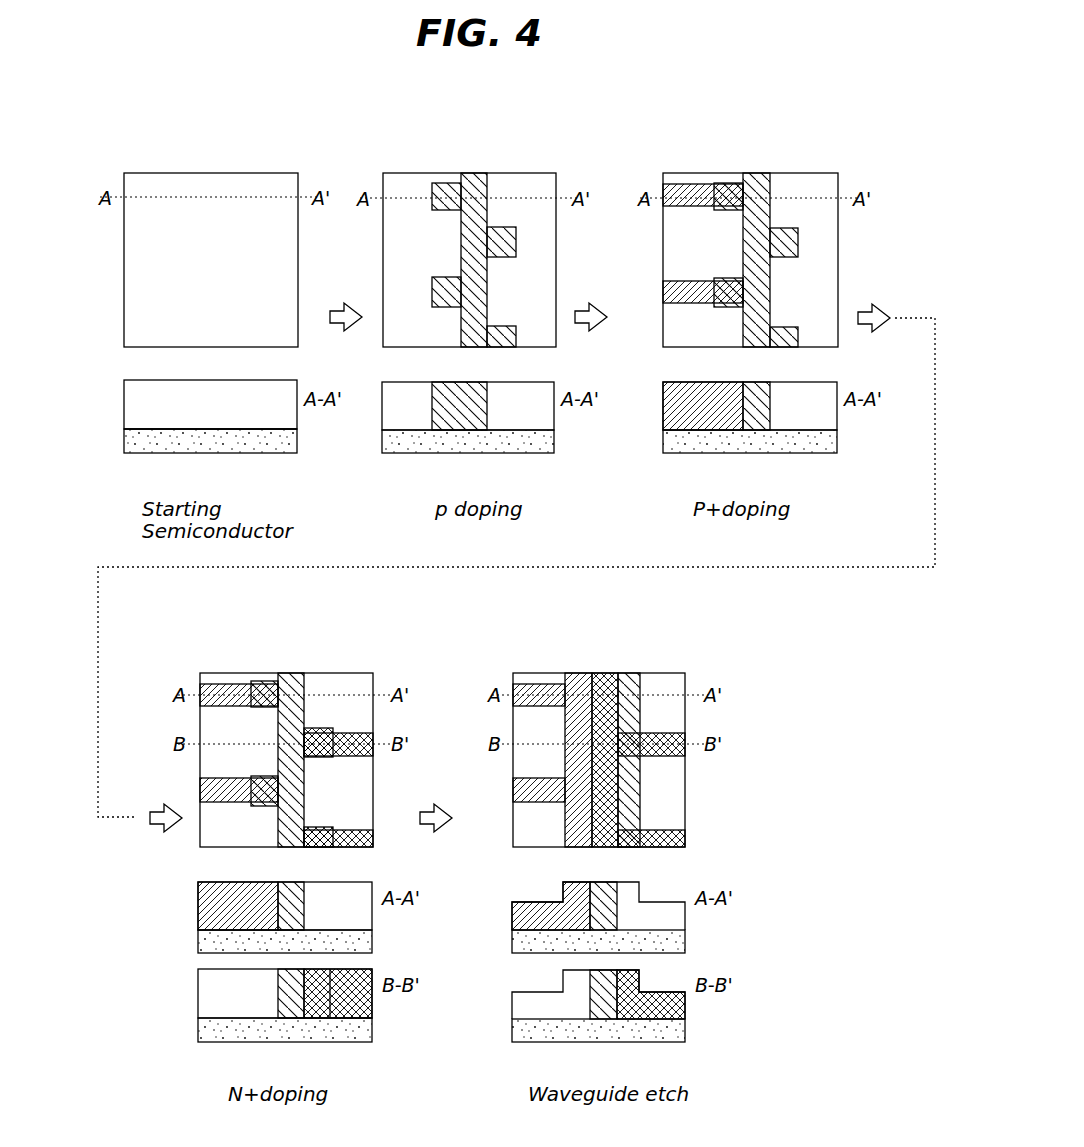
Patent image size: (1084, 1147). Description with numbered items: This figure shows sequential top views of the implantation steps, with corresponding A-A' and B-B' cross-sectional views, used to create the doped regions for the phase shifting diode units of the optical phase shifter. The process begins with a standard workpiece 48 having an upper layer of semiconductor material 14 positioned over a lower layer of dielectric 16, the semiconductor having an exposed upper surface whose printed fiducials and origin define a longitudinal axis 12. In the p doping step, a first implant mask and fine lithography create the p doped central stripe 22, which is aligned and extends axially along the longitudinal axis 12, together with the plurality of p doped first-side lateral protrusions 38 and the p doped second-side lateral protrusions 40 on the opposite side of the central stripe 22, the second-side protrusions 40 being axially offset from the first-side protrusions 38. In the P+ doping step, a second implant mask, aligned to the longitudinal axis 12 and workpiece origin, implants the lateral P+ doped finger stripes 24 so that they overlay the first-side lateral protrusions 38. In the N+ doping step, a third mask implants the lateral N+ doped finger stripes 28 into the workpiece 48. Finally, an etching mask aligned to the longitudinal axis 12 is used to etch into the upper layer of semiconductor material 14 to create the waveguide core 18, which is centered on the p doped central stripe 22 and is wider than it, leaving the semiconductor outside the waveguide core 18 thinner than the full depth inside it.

The longitudinal axis 12 is at (217, 173).
The upper layer of semiconductor material 14 is at (142, 410).
The lower layer of dielectric 16 is at (124, 438).
The waveguide core 18 is at (640, 695).
The p doped central stripe 22 is at (487, 195).
The lateral P+ doped finger stripes 24 is at (685, 190).
The lateral N+ doped finger stripes 28 is at (355, 730).
The p doped first-side lateral protrusions 38 is at (432, 190).
The p doped second-side lateral protrusions 40 is at (505, 240).
The workpiece 48 is at (90, 383).